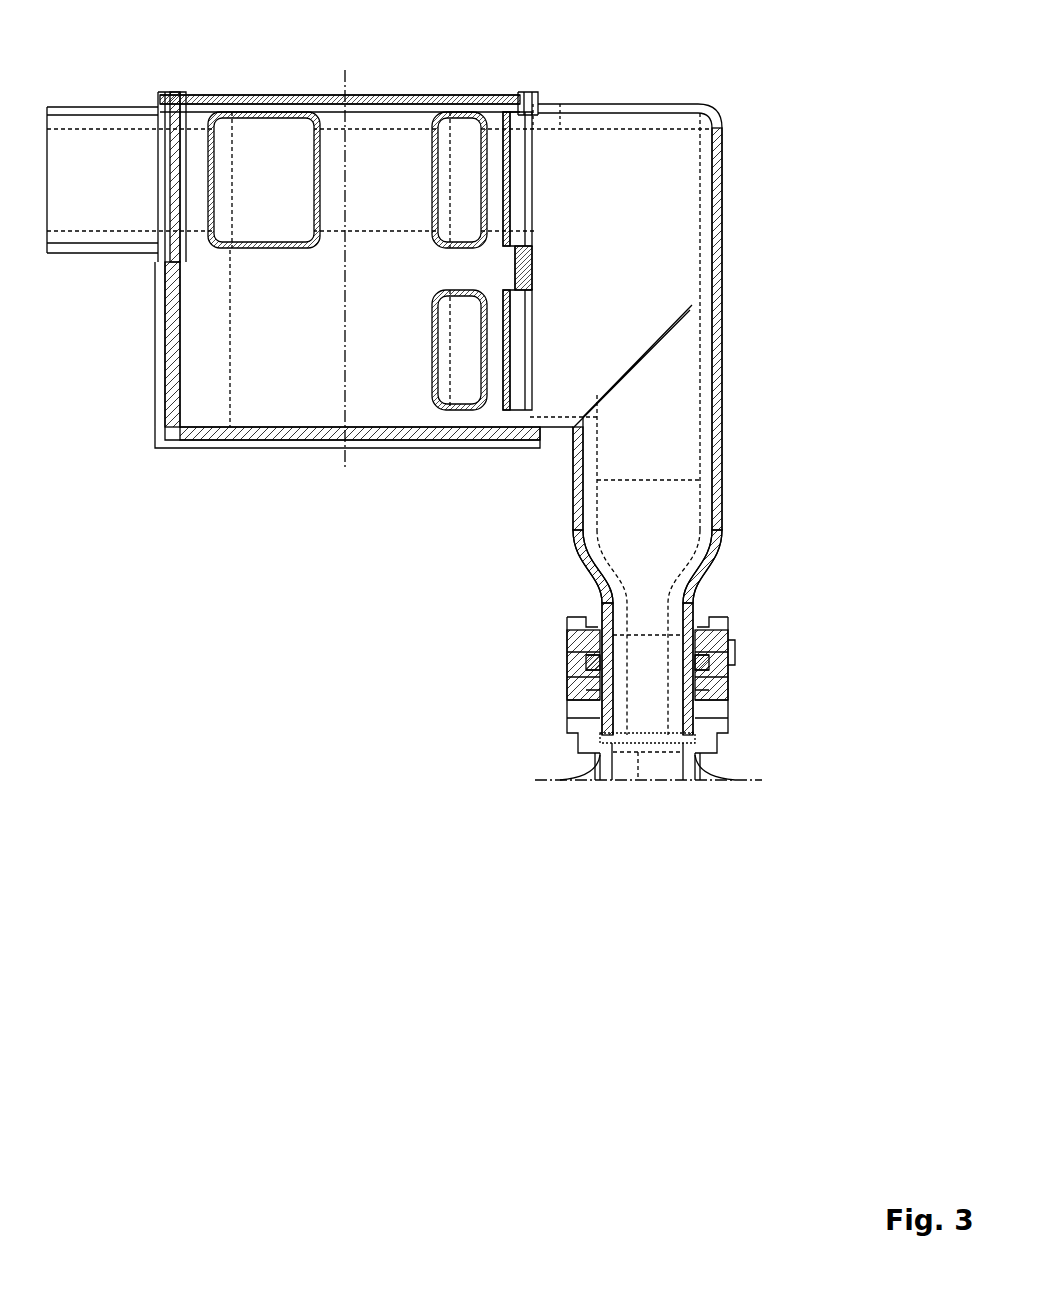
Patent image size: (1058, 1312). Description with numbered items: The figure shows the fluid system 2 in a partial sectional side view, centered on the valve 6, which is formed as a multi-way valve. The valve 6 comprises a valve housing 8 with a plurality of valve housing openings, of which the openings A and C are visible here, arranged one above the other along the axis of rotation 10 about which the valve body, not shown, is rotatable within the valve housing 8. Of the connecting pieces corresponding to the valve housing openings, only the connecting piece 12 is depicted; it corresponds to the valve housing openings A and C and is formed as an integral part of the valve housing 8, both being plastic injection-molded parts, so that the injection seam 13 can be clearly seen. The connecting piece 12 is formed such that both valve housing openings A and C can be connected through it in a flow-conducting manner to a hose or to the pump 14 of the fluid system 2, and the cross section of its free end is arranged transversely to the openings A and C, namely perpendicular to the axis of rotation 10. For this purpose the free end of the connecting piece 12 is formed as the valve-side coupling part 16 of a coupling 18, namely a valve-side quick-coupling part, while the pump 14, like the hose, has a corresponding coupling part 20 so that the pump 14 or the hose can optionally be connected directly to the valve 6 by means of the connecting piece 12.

The fluid system 2 is at (822, 107).
The valve 6 is at (802, 166).
The valve housing 8 is at (662, 228).
The axis of rotation 10 is at (350, 99).
The connecting piece 12 is at (685, 455).
The injection seam 13 is at (668, 332).
The pump 14 is at (705, 772).
The valve-side coupling part 16 is at (688, 724).
The coupling 18 is at (798, 645).
The coupling part 20 is at (717, 698).
The valve housing opening A is at (456, 194).
The valve housing opening C is at (467, 398).